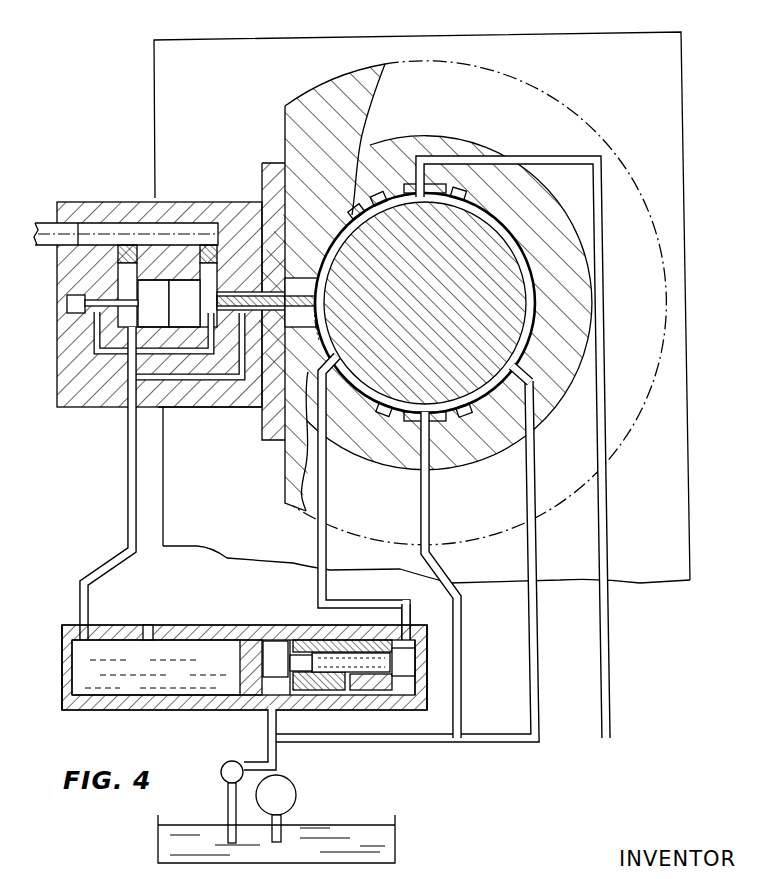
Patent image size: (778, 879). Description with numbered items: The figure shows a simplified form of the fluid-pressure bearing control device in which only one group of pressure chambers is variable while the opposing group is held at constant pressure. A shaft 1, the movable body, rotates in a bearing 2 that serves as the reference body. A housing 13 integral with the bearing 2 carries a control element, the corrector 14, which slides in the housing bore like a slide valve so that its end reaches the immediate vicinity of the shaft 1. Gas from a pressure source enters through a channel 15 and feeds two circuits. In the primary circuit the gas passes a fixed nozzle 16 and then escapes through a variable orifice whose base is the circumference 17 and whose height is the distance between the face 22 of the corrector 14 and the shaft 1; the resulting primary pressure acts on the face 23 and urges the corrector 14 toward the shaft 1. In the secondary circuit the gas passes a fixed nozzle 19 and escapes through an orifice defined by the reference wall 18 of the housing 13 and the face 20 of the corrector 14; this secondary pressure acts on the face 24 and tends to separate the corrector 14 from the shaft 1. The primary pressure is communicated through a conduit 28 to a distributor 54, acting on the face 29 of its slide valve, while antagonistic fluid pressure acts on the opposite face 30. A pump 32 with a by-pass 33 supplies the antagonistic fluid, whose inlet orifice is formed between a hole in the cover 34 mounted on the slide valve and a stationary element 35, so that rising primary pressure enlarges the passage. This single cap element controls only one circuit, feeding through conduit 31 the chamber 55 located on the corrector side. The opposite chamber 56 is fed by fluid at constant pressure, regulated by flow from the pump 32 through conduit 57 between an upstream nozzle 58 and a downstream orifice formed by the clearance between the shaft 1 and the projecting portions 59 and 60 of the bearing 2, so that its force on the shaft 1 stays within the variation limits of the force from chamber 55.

The shaft 1 is at (438, 290).
The bearing 2 is at (368, 121).
The housing 13 is at (238, 394).
The corrector 14 is at (181, 302).
The channel 15 is at (42, 222).
The nozzle 16 is at (127, 244).
The circumference 17 is at (328, 307).
The reference wall 18 is at (66, 300).
The nozzle 19 is at (206, 244).
The face of the corrector 20 is at (80, 325).
The face of the corrector 22 is at (326, 287).
The face of the corrector 23 is at (153, 302).
The face of the corrector 24 is at (246, 295).
The conduit 28 is at (118, 562).
The face of the slide valve 29 is at (108, 672).
The face of the slide valve 30 is at (399, 676).
The conduit 31 is at (408, 606).
The pump 32 is at (297, 801).
The by-pass 33 is at (236, 761).
The cover 34 is at (295, 656).
The stationary element 35 is at (270, 662).
The distributor 54 is at (63, 652).
The chamber 55 is at (343, 398).
The chamber 56 is at (522, 267).
The conduit 57 is at (531, 563).
The nozzle 58 is at (538, 404).
The projecting portion 59 is at (482, 402).
The projecting portion 60 is at (470, 209).